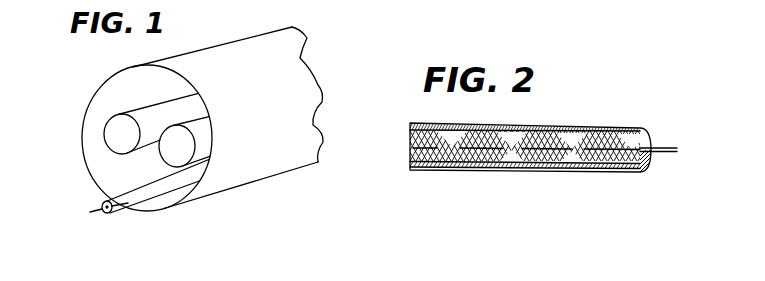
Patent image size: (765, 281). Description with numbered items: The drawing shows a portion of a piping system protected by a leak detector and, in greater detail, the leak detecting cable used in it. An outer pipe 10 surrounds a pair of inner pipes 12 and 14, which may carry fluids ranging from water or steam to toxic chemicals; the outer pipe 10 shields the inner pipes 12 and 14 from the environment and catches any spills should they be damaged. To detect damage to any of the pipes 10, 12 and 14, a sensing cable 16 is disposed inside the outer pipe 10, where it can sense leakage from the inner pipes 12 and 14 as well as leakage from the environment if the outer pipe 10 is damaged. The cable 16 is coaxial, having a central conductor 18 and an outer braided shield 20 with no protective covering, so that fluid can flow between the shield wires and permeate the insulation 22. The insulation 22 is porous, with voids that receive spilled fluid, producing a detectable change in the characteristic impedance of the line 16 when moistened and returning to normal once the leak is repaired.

In FIG. 1, the outer pipe 10 is at (220, 62).
In FIG. 1, the inner pipe 12 is at (157, 108).
In FIG. 1, the inner pipe 14 is at (171, 164).
In FIG. 1, the sensing cable 16 is at (113, 209).
In FIG. 2, the sensing cable 16 is at (625, 118).
In FIG. 2, the central conductor 18 is at (658, 147).
In FIG. 2, the outer braided shield 20 is at (553, 125).
In FIG. 2, the insulation 22 is at (650, 168).